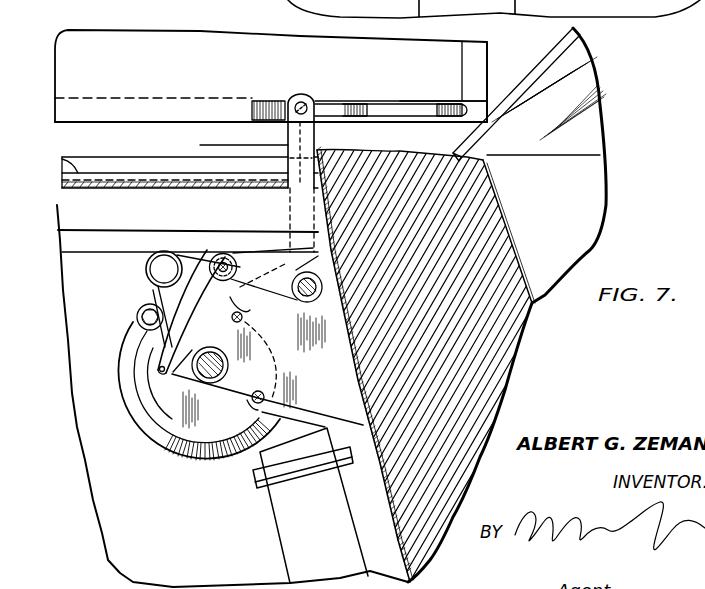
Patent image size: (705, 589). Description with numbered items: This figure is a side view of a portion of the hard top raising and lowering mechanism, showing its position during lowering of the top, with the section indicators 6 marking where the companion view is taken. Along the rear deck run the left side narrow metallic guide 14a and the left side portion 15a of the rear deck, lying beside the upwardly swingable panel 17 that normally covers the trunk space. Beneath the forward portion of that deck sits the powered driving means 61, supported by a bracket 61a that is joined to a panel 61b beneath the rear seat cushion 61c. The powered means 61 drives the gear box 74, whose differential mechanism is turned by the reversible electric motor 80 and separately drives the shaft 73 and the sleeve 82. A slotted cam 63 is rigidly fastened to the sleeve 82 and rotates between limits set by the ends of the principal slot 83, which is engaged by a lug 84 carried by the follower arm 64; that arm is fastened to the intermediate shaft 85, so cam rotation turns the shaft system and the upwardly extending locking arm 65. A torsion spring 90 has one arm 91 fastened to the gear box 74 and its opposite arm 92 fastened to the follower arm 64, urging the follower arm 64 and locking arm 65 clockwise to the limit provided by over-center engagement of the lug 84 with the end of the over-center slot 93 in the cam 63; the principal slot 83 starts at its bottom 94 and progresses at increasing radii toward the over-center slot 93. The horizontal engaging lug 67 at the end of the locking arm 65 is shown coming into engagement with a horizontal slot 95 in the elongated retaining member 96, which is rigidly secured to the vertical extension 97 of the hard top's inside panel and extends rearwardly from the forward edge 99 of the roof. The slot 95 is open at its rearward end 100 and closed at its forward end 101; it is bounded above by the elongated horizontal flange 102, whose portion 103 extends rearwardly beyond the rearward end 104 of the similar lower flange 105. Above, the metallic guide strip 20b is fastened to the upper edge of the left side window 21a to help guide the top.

The section line 6- 6 is at (200, 143).
The left side narrow metallic guide 14a is at (62, 157).
The left side portion of the rear deck 15a is at (64, 189).
The upwardly swingable panel 17 is at (133, 188).
The metallic guide strip 20b is at (545, 53).
The left side window 21a is at (600, 88).
The powered driving means 61 is at (196, 464).
The bracket 61a is at (338, 394).
The panel 61b is at (362, 380).
The rear seat cushion 61c is at (461, 330).
The slotted cam 63 is at (180, 300).
The follower arm 64 is at (250, 260).
The locking arm 65 is at (288, 145).
The horizontal engaging lug 67 is at (302, 108).
The shaft 73 is at (208, 350).
The gear box 74 is at (137, 339).
The electric motor 80 is at (331, 537).
The sleeve 82 is at (212, 379).
The principal slot 83 is at (155, 345).
The lug 84 is at (223, 265).
The intermediate shaft 85 is at (306, 298).
The torsion spring 90 is at (159, 252).
The spring arm 91 is at (148, 281).
The spring arm 92 is at (187, 258).
The over-center slot 93 is at (229, 275).
The bottom of the slot 94 is at (163, 373).
The horizontal slot 95 is at (385, 108).
The elongated retaining member 96 is at (388, 92).
The vertical extension 97 is at (173, 117).
The forward edge of the roof 99 is at (488, 100).
The rearward end of the slot 100 is at (315, 107).
The forward end of the slot 101 is at (458, 106).
The elongated horizontal flange 102 is at (368, 78).
The rearwardly extending portion of the upper flange 103 is at (262, 101).
The rearward end of the lower flange 104 is at (302, 115).
The lower flange 105 is at (440, 128).